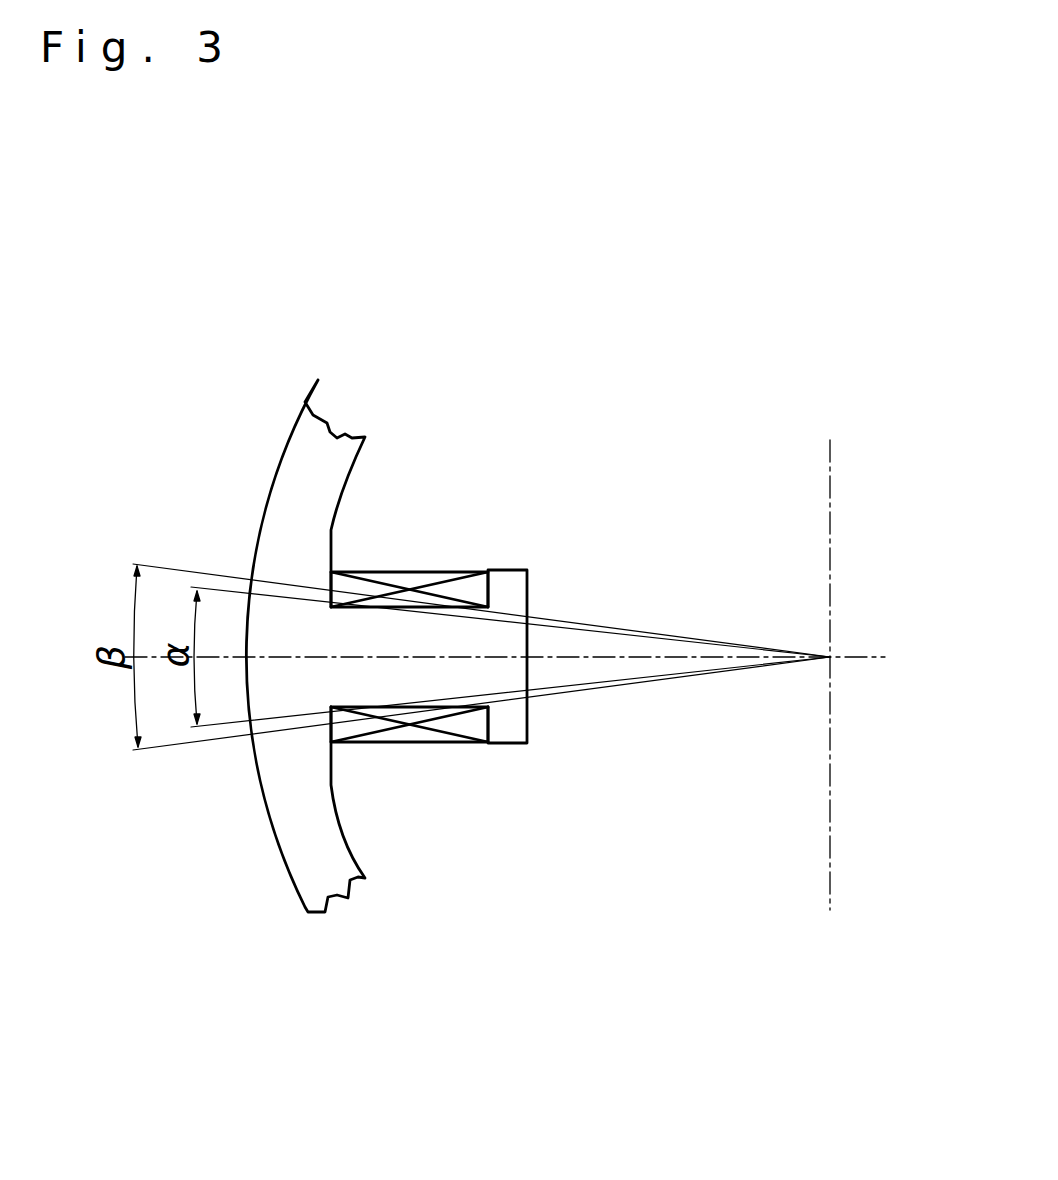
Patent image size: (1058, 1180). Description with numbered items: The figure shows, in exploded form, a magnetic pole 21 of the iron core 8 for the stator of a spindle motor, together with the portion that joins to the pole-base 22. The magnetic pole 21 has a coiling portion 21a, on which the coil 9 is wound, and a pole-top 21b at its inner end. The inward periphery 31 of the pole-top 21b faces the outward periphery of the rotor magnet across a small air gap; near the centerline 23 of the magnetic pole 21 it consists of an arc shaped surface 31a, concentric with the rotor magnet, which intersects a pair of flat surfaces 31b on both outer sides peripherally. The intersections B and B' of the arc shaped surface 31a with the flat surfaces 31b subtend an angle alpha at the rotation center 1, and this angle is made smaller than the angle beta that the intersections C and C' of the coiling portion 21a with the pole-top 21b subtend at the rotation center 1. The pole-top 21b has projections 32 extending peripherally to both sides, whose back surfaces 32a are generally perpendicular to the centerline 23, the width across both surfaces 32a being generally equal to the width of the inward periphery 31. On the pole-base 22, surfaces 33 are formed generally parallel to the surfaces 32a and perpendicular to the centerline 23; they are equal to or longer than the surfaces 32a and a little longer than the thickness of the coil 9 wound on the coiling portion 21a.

The rotation center 1 is at (830, 657).
The iron core 8 is at (252, 192).
The coil 9 is at (358, 730).
The magnetic pole 21 is at (548, 270).
The coiling portion 21a is at (430, 572).
The pole-top 21b is at (498, 628).
The pole-base 22 is at (309, 472).
The centerline 23 is at (626, 660).
The inward periphery 31 is at (635, 353).
The arc shaped surface 31a is at (527, 650).
The flat surfaces 31b is at (528, 595).
The projections 32 is at (510, 725).
The surfaces 32a is at (483, 741).
The surfaces 33 is at (331, 557).